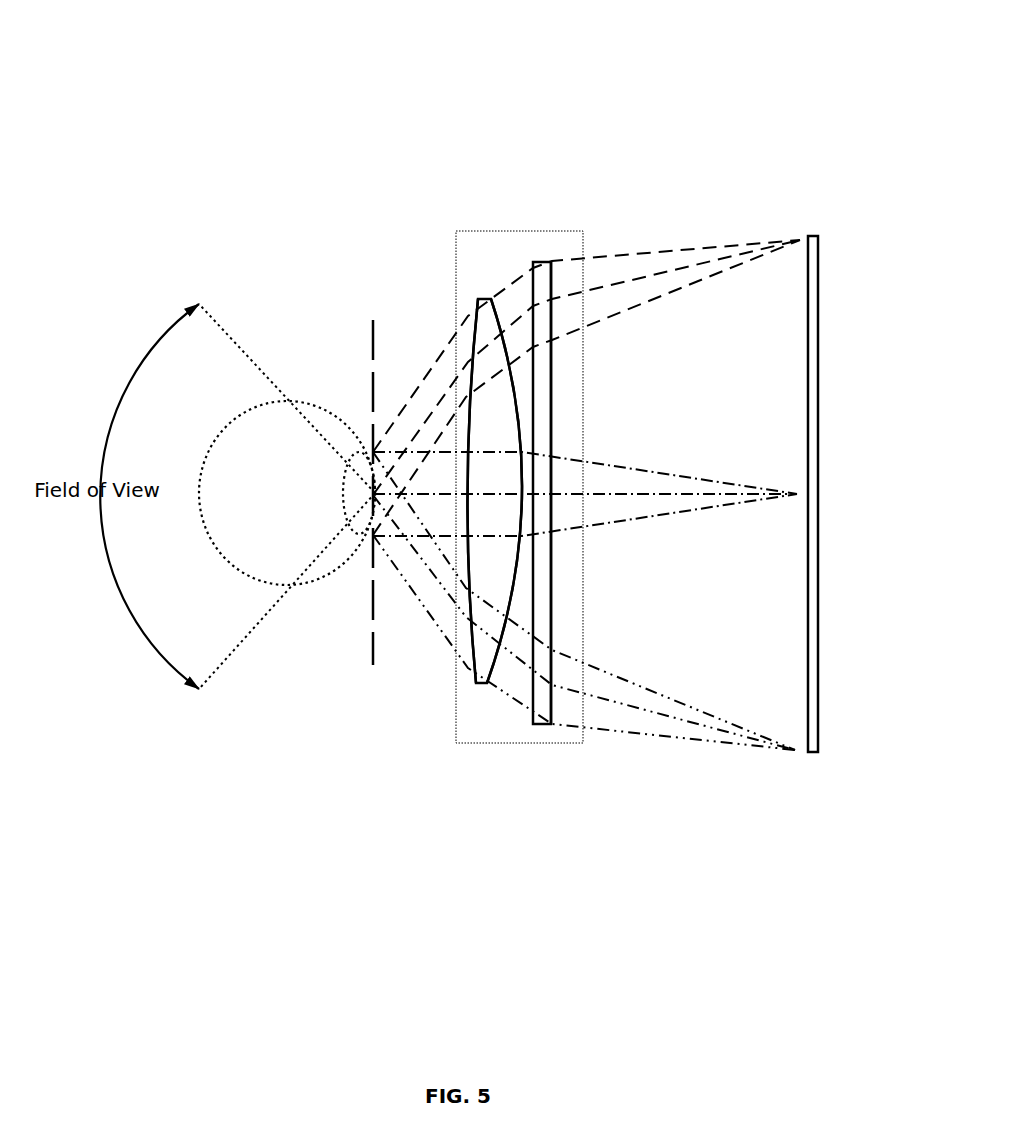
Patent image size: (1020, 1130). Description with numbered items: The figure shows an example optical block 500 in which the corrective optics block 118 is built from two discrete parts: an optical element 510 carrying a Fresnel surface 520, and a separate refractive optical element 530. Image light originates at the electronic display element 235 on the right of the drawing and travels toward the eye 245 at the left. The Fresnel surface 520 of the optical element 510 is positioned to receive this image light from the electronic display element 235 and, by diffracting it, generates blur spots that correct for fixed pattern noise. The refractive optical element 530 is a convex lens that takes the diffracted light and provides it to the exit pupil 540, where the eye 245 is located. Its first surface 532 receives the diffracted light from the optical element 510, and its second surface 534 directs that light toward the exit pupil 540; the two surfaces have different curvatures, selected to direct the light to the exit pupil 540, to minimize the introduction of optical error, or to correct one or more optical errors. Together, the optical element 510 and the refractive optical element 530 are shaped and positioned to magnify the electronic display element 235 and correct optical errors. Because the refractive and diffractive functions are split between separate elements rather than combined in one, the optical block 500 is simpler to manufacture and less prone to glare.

The optical block 500 is at (101, 53).
The eye 245 is at (206, 452).
The exit pupil 540 is at (366, 632).
The corrective optics block 118 is at (508, 230).
The refractive optical element 530 is at (486, 404).
The second surface 534 is at (472, 650).
The first surface 532 is at (498, 667).
The optical element 510 is at (545, 263).
The Fresnel surface 520 is at (551, 603).
The electronic display element 235 is at (818, 237).